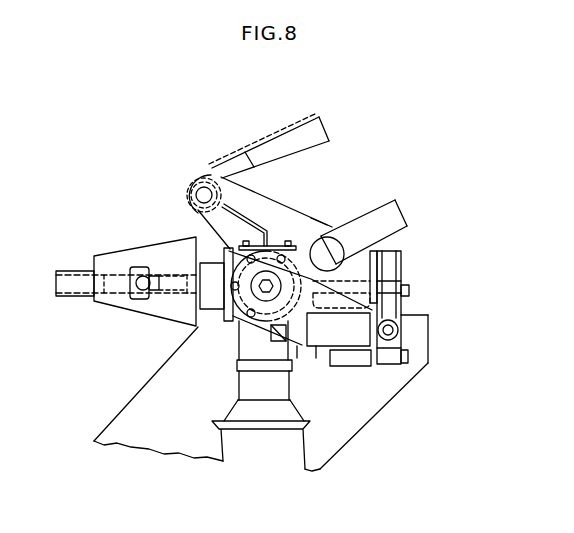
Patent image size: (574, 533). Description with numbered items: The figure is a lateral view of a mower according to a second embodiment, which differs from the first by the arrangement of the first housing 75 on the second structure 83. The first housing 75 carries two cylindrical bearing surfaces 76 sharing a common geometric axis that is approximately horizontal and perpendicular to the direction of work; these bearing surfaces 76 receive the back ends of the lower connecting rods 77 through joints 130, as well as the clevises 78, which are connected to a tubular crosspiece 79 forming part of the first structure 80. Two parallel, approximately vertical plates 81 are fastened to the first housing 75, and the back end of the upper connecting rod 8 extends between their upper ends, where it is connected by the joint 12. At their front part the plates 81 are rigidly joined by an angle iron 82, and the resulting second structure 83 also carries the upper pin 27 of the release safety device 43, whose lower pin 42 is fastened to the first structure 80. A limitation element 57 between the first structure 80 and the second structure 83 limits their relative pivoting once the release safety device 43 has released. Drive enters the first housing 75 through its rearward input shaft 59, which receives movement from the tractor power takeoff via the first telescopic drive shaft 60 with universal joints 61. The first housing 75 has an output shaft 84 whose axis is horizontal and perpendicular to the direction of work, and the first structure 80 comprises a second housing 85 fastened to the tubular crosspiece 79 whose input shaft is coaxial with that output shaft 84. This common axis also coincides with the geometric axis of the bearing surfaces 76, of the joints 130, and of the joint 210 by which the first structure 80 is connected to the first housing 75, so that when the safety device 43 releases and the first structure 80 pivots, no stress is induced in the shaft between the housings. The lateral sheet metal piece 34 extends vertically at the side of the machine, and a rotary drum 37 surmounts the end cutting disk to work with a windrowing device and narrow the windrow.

The upper connecting rod 8 is at (259, 155).
The joint 12 is at (191, 190).
The parallel plates 81 is at (262, 204).
The second structure 83 is at (323, 223).
The lower connecting rods 77 is at (399, 222).
The output shaft 84 is at (323, 254).
The joints 130 is at (270, 250).
The cylindrical bearing surfaces 76 is at (229, 256).
The first housing 75 is at (231, 318).
The joint 210 is at (262, 302).
The limitation element 57 is at (276, 343).
The first structure 80 is at (292, 368).
The second housing 85 is at (253, 393).
The rotary drum 37 is at (298, 439).
The lateral sheet metal piece 34 is at (132, 410).
The clevises 78 is at (309, 351).
The tubular crosspiece 79 is at (323, 354).
The pin 42 is at (362, 365).
The angle iron 82 is at (377, 268).
The pin 27 is at (410, 291).
The release safety device 43 is at (406, 304).
The first telescopic drive shaft 60 is at (70, 283).
The universal joints 61 is at (131, 274).
The input shaft 59 is at (173, 279).